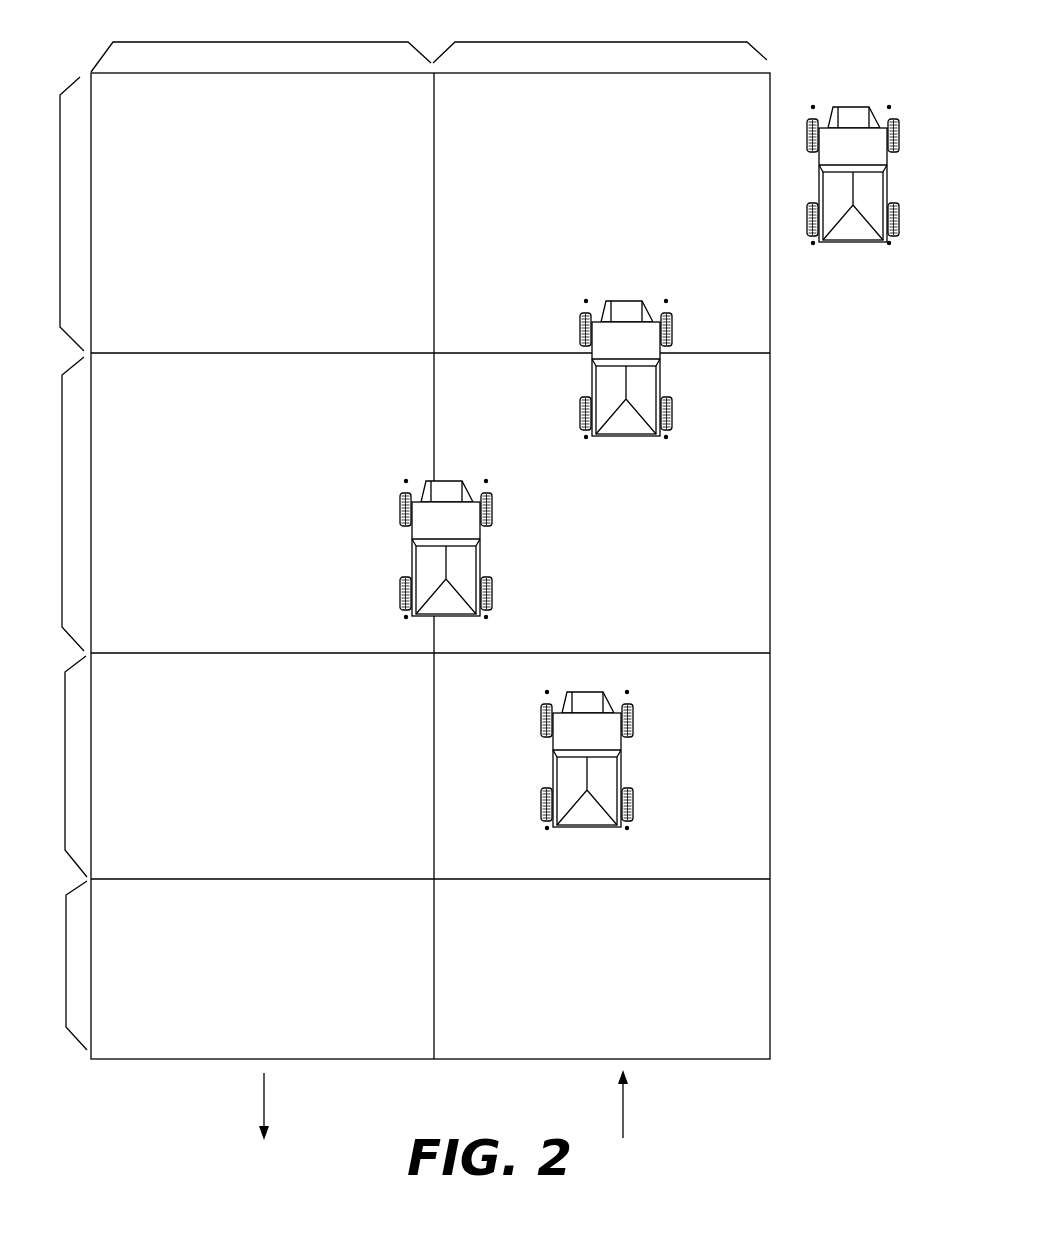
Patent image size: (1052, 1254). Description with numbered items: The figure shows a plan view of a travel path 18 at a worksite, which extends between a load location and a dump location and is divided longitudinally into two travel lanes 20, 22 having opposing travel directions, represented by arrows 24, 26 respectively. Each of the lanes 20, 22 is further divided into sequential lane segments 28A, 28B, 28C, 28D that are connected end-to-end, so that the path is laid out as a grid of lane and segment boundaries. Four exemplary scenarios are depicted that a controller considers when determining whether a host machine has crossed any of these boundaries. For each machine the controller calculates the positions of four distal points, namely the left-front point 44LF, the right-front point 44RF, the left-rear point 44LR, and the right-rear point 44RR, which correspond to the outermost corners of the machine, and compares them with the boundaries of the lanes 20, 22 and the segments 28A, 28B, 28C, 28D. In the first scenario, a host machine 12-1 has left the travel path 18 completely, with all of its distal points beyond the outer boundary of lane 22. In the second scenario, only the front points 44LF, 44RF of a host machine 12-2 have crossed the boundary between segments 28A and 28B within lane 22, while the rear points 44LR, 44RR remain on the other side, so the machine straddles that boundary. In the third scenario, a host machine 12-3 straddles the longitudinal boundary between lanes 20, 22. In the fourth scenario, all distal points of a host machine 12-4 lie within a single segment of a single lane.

The host machine 12-1 is at (850, 169).
The host machine 12-2 is at (658, 438).
The host machine 12-3 is at (477, 619).
The host machine 12-4 is at (620, 830).
The travel path 18 is at (799, 1036).
The travel lane 20 is at (228, 42).
The travel lane 22 is at (567, 42).
The arrow 24 is at (266, 1100).
The arrow 26 is at (626, 1095).
The lane segment 28A is at (60, 215).
The lane segment 28B is at (61, 493).
The lane segment 28C is at (64, 762).
The lane segment 28D is at (66, 962).
The left-front distal point 44LF is at (813, 106).
The right-front distal point 44RF is at (889, 106).
The left-rear distal point 44LR is at (813, 245).
The right-rear distal point 44RR is at (901, 245).